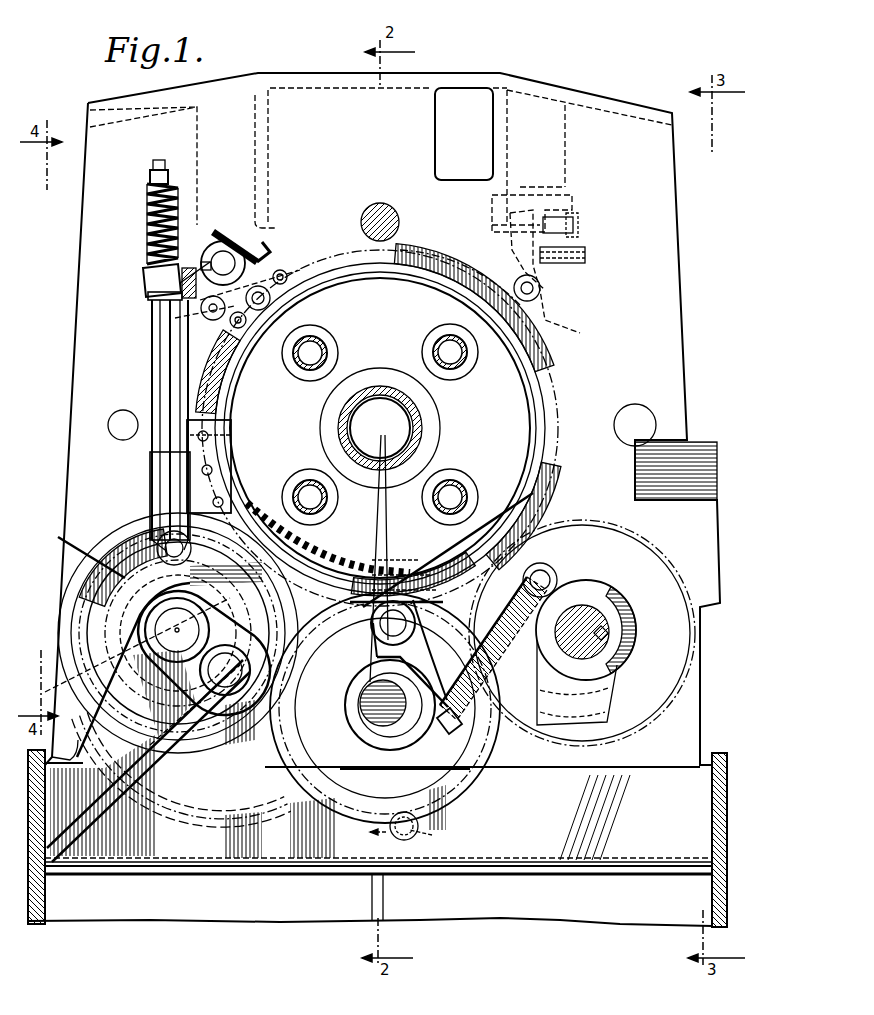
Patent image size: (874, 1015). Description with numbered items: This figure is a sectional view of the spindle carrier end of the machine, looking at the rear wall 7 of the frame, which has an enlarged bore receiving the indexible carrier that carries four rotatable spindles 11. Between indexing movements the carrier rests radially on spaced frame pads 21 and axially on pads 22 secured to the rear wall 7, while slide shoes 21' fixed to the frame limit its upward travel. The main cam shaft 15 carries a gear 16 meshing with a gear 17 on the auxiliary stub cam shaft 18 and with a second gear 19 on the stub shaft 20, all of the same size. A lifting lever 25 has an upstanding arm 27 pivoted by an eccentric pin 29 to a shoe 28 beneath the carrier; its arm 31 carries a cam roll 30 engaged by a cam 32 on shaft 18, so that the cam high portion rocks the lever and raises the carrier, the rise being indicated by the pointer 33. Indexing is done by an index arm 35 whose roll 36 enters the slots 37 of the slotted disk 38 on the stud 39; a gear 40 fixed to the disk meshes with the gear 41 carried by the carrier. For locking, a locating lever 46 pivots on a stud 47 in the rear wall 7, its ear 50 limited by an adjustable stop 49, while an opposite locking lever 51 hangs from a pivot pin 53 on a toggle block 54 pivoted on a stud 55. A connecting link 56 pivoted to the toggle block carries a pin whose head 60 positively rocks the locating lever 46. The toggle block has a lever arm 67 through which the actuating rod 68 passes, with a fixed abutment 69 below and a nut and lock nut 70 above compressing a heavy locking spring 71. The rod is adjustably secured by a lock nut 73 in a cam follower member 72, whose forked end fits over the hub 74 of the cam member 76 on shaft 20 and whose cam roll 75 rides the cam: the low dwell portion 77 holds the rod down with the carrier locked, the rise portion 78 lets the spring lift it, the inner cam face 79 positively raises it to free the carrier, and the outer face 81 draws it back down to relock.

The rear wall 7 is at (377, 500).
The rotatable spindles 11 is at (480, 330).
The main cam shaft 15 is at (390, 705).
The gear 16 is at (487, 748).
The gear 17 is at (672, 580).
The auxiliary stub cam shaft 18 is at (598, 622).
The second gear 19 is at (110, 545).
The auxiliary or stub shaft 20 is at (70, 614).
The frame pads 21 is at (385, 469).
The slide shoes 21' is at (426, 288).
The pads 22 is at (232, 440).
The lifting lever 25 is at (448, 733).
The upstanding arm 27 is at (415, 653).
The shoe 28 is at (405, 575).
The pin 29 is at (390, 600).
The cam roll 30 is at (552, 568).
The arm 31 is at (493, 648).
The cam 32 is at (637, 630).
The pointer 33 is at (420, 285).
The index arm 35 is at (445, 775).
The roll 36 is at (420, 829).
The slots 37 is at (280, 805).
The slotted disk 38 is at (262, 825).
The stub shaft or stud 39 is at (200, 815).
The gear 40 is at (310, 560).
The gear 41 is at (380, 525).
The locating lever 46 is at (590, 330).
The stud 47 is at (542, 290).
The adjustable stop 49 is at (580, 225).
The ear 50 is at (565, 200).
The locking lever 51 is at (152, 381).
The pivot pin 53 is at (170, 318).
The toggle block 54 is at (213, 245).
The stud 55 is at (262, 258).
The connecting link 56 is at (398, 222).
The head 60 is at (588, 250).
The lever arm 67 is at (145, 282).
The actuating rod 68 is at (152, 353).
The fixed abutment 69 is at (150, 300).
The nut and lock nut 70 is at (150, 180).
The heavy spring 71 is at (147, 212).
The cam follower member 72 is at (150, 460).
The lock nut 73 is at (150, 440).
The hub 74 is at (45, 692).
The cam roll 75 is at (158, 538).
The cam member 76 is at (125, 586).
The low dwell portion 77 is at (79, 552).
The rise portion 78 is at (212, 612).
The inner cam face 79 is at (245, 640).
The outer face 81 is at (150, 800).